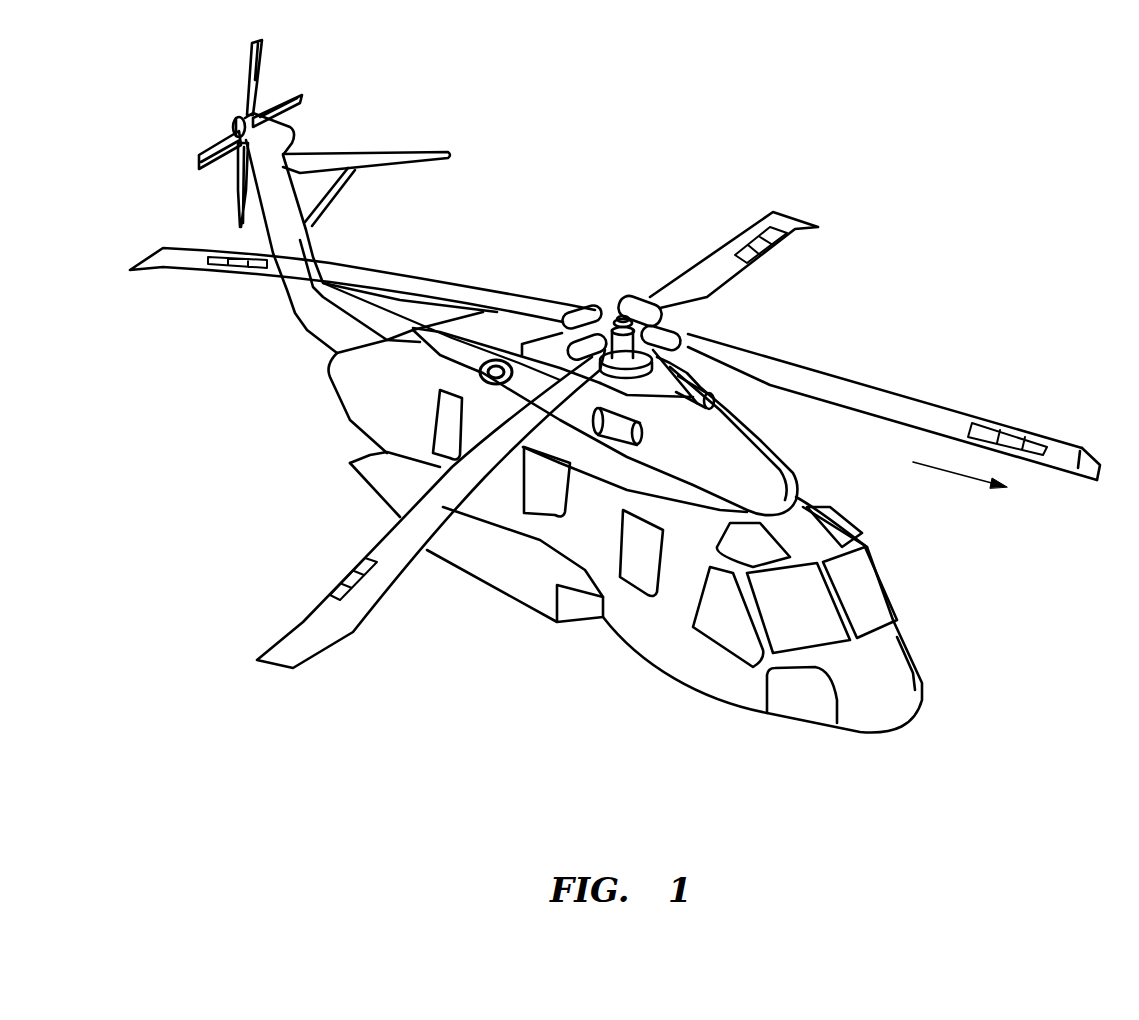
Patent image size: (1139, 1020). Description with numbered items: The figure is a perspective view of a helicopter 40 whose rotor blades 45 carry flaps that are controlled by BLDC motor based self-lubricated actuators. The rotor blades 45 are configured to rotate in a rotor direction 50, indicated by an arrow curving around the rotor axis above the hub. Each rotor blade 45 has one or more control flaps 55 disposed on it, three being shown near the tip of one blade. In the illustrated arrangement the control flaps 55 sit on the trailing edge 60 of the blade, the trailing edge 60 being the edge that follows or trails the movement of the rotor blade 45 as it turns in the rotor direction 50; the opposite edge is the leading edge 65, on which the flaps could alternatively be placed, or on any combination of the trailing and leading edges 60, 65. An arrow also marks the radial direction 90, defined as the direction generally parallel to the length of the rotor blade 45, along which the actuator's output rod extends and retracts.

The helicopter 40 is at (695, 728).
The rotor blade 45 is at (894, 390).
The rotor direction 50 is at (623, 318).
The control flap 55 is at (1013, 447).
The trailing edge 60 is at (830, 405).
The leading edge 65 is at (830, 365).
The radial direction 90 is at (955, 476).